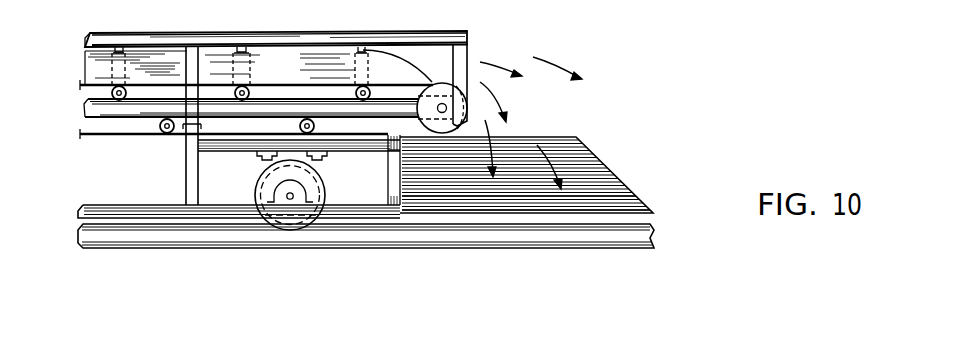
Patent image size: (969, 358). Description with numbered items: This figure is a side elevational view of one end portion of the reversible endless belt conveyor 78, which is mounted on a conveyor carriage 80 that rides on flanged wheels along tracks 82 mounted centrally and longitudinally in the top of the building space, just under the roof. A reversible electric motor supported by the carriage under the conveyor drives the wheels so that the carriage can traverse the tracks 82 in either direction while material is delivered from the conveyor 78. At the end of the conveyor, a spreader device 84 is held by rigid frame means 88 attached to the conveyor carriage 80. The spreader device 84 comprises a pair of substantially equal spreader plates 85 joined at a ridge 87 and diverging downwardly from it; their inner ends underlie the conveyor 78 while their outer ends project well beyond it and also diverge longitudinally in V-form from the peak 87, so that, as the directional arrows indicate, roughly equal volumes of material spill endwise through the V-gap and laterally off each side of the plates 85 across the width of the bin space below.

The conveyor 78 is at (283, 83).
The conveyor carriage 80 is at (257, 202).
The tracks 82 is at (457, 235).
The spreader device 84 is at (586, 138).
The spreader plates 85 is at (598, 180).
The ridge 87 is at (527, 137).
The rigid frame means 88 is at (625, 200).